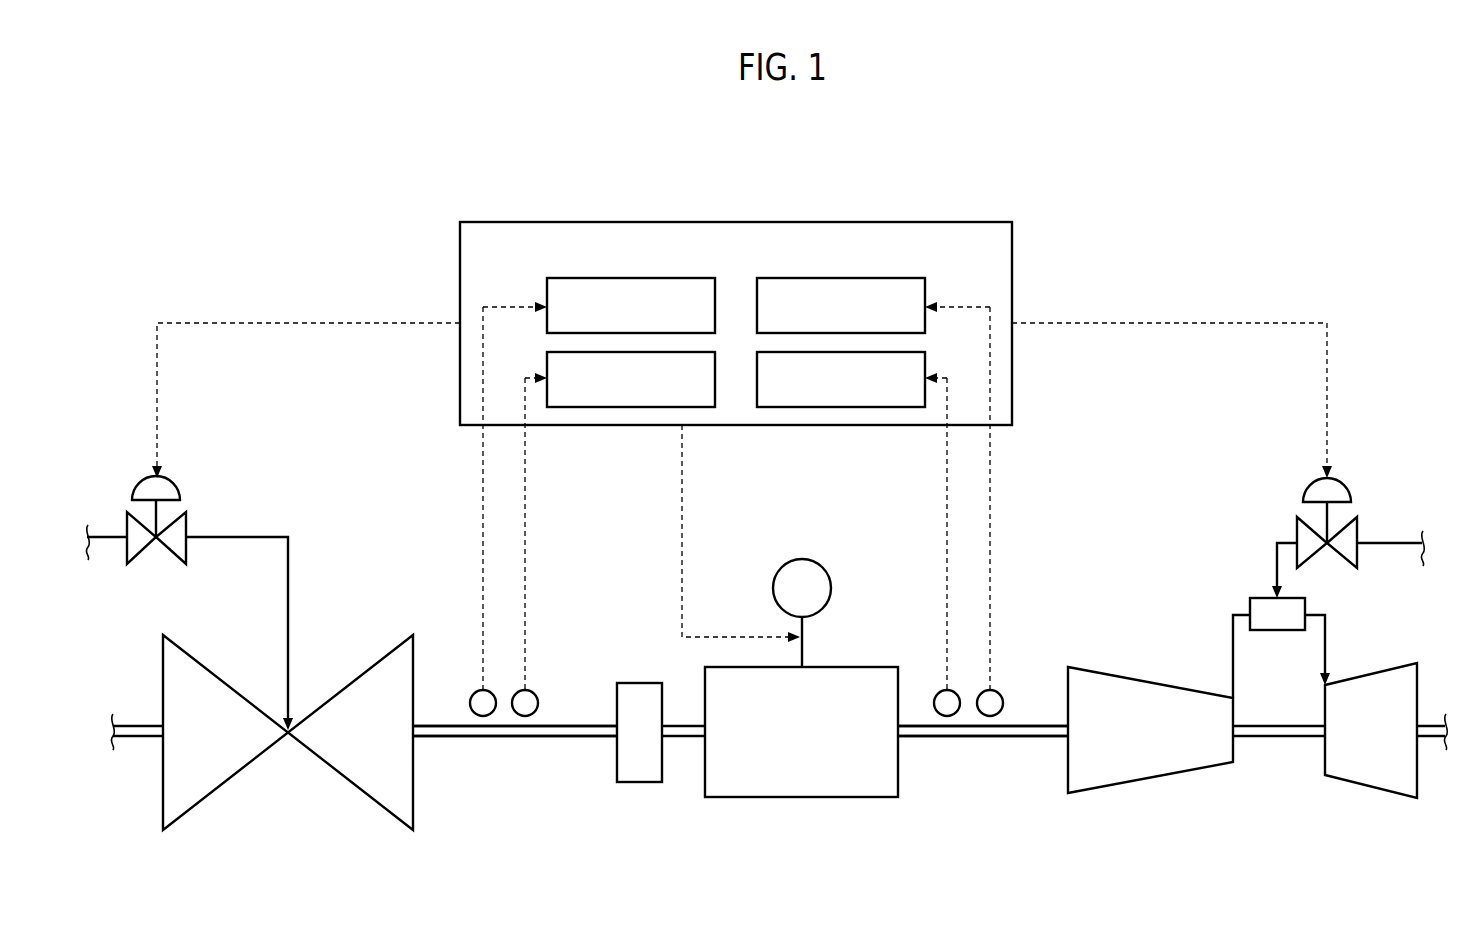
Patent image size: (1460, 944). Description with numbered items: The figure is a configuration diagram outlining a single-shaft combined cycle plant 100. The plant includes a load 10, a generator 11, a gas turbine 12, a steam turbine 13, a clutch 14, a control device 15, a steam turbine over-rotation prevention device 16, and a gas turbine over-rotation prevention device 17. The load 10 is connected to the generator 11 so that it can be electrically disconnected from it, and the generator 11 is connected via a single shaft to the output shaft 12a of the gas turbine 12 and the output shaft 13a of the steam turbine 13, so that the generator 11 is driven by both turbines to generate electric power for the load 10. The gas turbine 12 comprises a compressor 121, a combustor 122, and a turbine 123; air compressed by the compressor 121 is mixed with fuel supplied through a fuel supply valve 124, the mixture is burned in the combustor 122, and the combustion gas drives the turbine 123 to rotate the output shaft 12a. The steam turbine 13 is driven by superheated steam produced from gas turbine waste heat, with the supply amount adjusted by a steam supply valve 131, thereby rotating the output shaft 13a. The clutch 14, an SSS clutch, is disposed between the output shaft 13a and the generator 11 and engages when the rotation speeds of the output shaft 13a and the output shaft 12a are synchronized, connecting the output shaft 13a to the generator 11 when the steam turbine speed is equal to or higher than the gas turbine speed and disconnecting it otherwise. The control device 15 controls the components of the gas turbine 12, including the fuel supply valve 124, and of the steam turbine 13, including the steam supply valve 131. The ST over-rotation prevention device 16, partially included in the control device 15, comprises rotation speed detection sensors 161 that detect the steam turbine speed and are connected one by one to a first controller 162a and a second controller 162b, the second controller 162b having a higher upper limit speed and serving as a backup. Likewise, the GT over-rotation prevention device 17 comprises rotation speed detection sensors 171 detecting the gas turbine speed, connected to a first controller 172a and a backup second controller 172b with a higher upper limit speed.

The single-shaft combined cycle plant 100 is at (1378, 227).
The load 10 is at (773, 583).
The generator 11 is at (827, 667).
The gas turbine 12 is at (1242, 713).
The output shaft of the gas turbine 12a is at (983, 738).
The compressor 121 is at (1150, 777).
The combustor 122 is at (1277, 630).
The turbine 123 is at (1370, 783).
The fuel supply valve 124 is at (1355, 555).
The steam turbine 13 is at (368, 637).
The output shaft of the steam turbine 13a is at (517, 738).
The steam supply valve 131 is at (190, 522).
The clutch 14 is at (638, 683).
The control device 15 is at (970, 222).
The steam turbine over-rotation prevention device 16 is at (555, 323).
The rotation speed detection sensor 161 is at (478, 688).
The first controller 162a is at (603, 278).
The second controller 162b is at (625, 407).
The gas turbine over-rotation prevention device 17 is at (916, 323).
The rotation speed detection sensor 171 is at (942, 688).
The first controller 172a is at (868, 278).
The second controller 172b is at (843, 407).